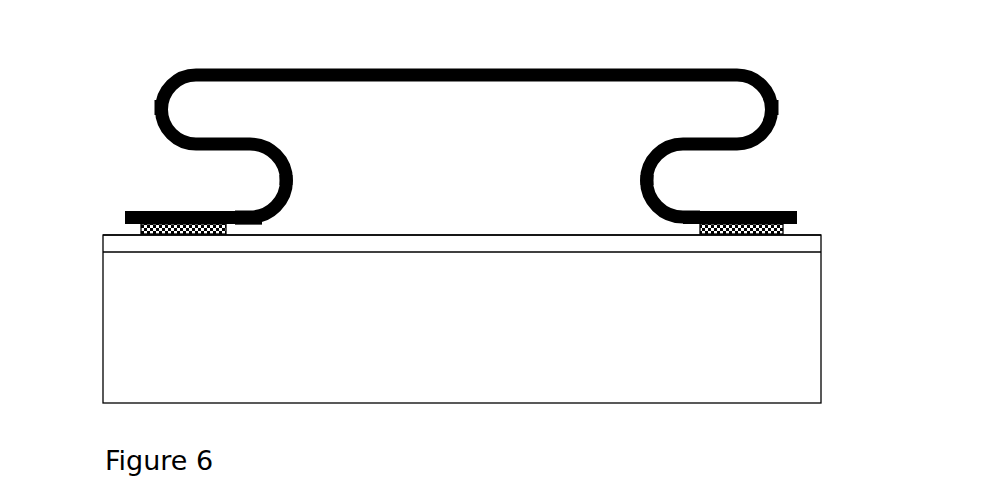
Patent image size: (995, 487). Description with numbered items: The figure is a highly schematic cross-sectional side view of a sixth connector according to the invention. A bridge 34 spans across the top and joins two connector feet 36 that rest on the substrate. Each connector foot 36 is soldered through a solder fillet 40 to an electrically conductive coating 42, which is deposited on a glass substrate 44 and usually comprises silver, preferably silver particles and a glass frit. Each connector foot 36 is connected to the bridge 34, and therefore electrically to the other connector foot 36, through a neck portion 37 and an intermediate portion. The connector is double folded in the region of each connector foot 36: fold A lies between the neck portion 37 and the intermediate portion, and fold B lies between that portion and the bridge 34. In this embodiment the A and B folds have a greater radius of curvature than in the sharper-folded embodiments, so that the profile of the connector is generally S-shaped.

The bridge 34 is at (402, 70).
The connector foot 36 is at (187, 212).
The neck portion 37 is at (258, 225).
The solder fillet 40 is at (141, 229).
The electrically conductive coating 42 is at (115, 247).
The glass substrate 44 is at (115, 343).
The fold A is at (292, 183).
The fold B is at (157, 104).